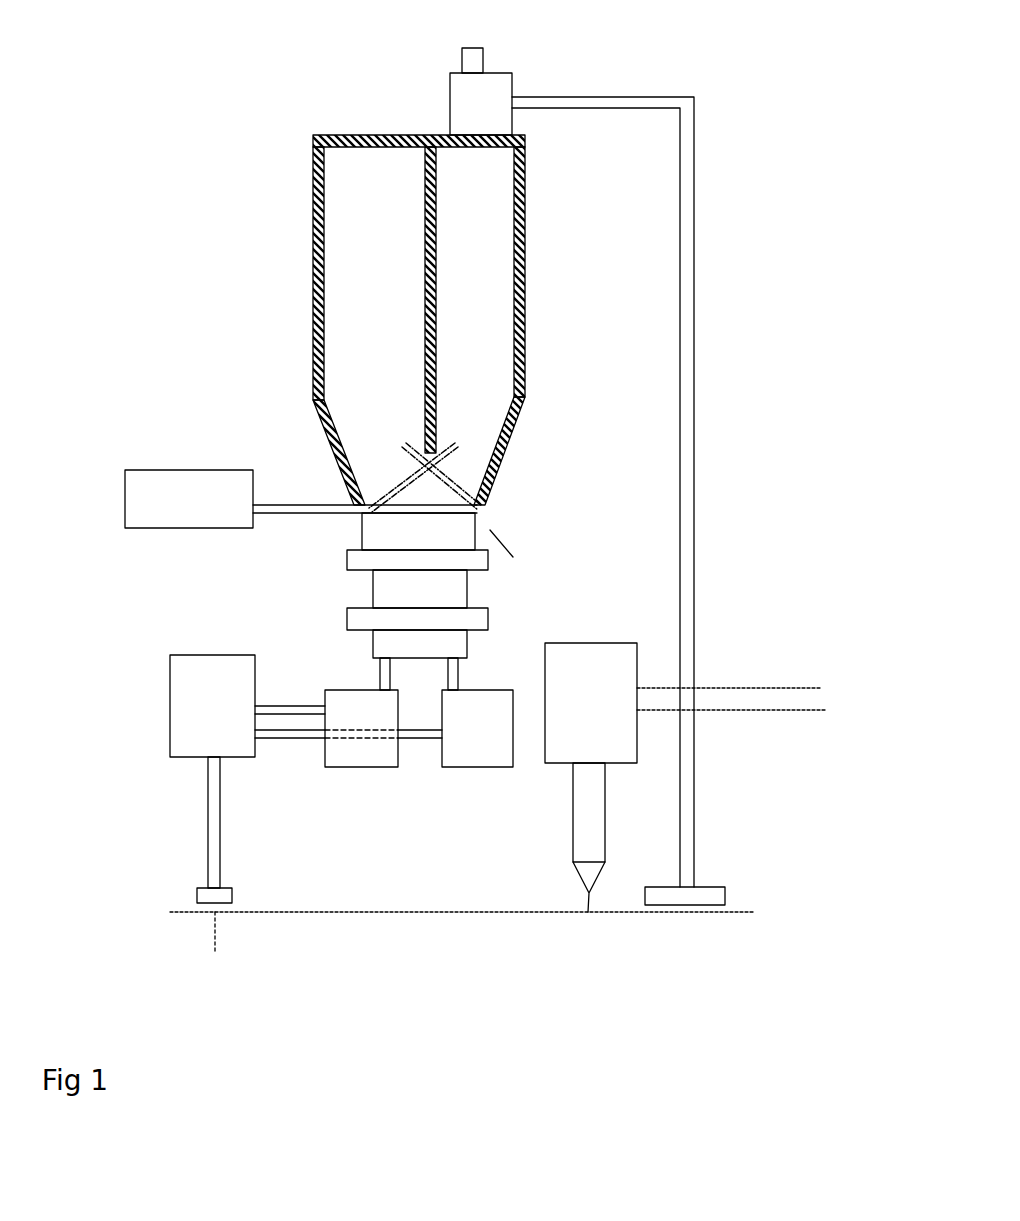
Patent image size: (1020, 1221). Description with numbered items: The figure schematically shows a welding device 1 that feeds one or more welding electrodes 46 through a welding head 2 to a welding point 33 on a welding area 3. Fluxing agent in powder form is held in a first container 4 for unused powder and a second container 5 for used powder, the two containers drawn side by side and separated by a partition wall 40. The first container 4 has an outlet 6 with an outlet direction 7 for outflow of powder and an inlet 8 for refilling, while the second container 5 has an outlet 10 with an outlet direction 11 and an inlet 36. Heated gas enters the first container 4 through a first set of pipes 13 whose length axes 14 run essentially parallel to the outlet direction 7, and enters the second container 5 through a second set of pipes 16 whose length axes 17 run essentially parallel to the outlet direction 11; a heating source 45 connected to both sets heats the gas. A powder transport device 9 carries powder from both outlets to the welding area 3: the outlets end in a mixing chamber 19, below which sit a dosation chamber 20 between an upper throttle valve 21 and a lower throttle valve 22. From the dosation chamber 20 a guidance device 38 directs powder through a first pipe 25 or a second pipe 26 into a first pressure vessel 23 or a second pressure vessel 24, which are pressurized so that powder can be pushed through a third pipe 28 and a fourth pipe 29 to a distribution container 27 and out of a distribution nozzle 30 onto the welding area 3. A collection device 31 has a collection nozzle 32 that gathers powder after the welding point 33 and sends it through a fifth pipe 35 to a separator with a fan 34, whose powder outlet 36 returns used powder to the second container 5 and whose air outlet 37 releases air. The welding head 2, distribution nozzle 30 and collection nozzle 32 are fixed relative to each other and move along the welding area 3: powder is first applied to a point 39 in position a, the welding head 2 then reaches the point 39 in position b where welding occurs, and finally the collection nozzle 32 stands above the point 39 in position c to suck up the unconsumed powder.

The welding device 1 is at (211, 160).
The welding head 2 is at (588, 810).
The welding area 3 is at (310, 912).
The first container 4 is at (360, 299).
The second container 5 is at (457, 299).
The outlet 6 is at (358, 422).
The outlet direction 7 is at (393, 478).
The inlet 8 is at (377, 140).
The powder transport device 9 is at (250, 594).
The outlet 10 is at (482, 427).
The outlet direction 11 is at (475, 453).
The first set of pipes 13 is at (408, 450).
The length axes 14 is at (362, 510).
The second set of pipes 16 is at (442, 490).
The length axes 17 is at (488, 530).
The mixing chamber 19 is at (483, 520).
The dosation chamber 20 is at (440, 593).
The upper throttle valve 21 is at (473, 562).
The lower throttle valve 22 is at (480, 623).
The first pressure vessel 23 is at (365, 755).
The second pressure vessel 24 is at (474, 755).
The first pipe 25 is at (382, 675).
The second pipe 26 is at (455, 675).
The distribution container 27 is at (192, 716).
The third pipe 28 is at (280, 714).
The fourth pipe 29 is at (295, 738).
The distribution nozzle 30 is at (197, 890).
The collection device 31 is at (733, 428).
The collection nozzle 32 is at (713, 893).
The welding point 33 is at (590, 910).
The separator with fan 34 is at (502, 85).
The fifth pipe 35 is at (695, 270).
The powder outlet 36 is at (482, 140).
The air outlet 37 is at (475, 60).
The guidance device 38 is at (372, 635).
The point 39 is at (213, 953).
The partition wall 40 is at (435, 213).
The heating source 45 is at (160, 516).
The welding electrodes 46 is at (583, 905).
The position a is at (230, 907).
The position b is at (586, 920).
The position c is at (706, 915).